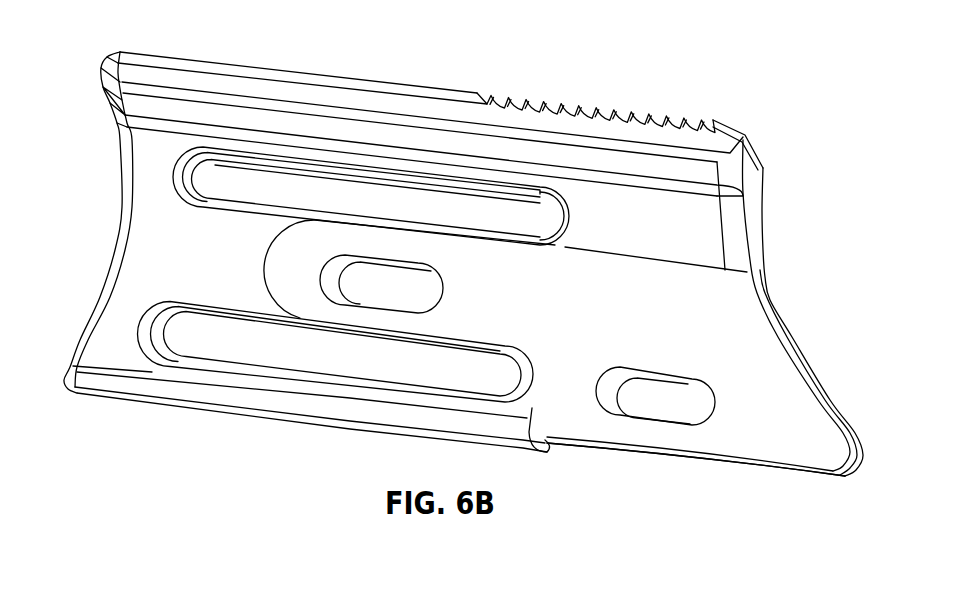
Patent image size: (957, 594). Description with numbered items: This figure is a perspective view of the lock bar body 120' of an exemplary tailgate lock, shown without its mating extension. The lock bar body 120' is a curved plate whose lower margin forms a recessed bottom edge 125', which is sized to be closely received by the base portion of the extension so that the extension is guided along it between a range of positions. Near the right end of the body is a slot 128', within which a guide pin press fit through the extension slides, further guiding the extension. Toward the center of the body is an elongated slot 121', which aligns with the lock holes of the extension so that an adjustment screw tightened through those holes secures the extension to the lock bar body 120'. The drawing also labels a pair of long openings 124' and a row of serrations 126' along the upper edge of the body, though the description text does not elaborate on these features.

The lock bar body 120' is at (465, 264).
The elongated slot 121' is at (409, 342).
The elongated slots 124' is at (307, 274).
The recessed bottom edge 125' is at (696, 484).
The serrated teeth 126' is at (596, 82).
The slot 128' is at (733, 381).